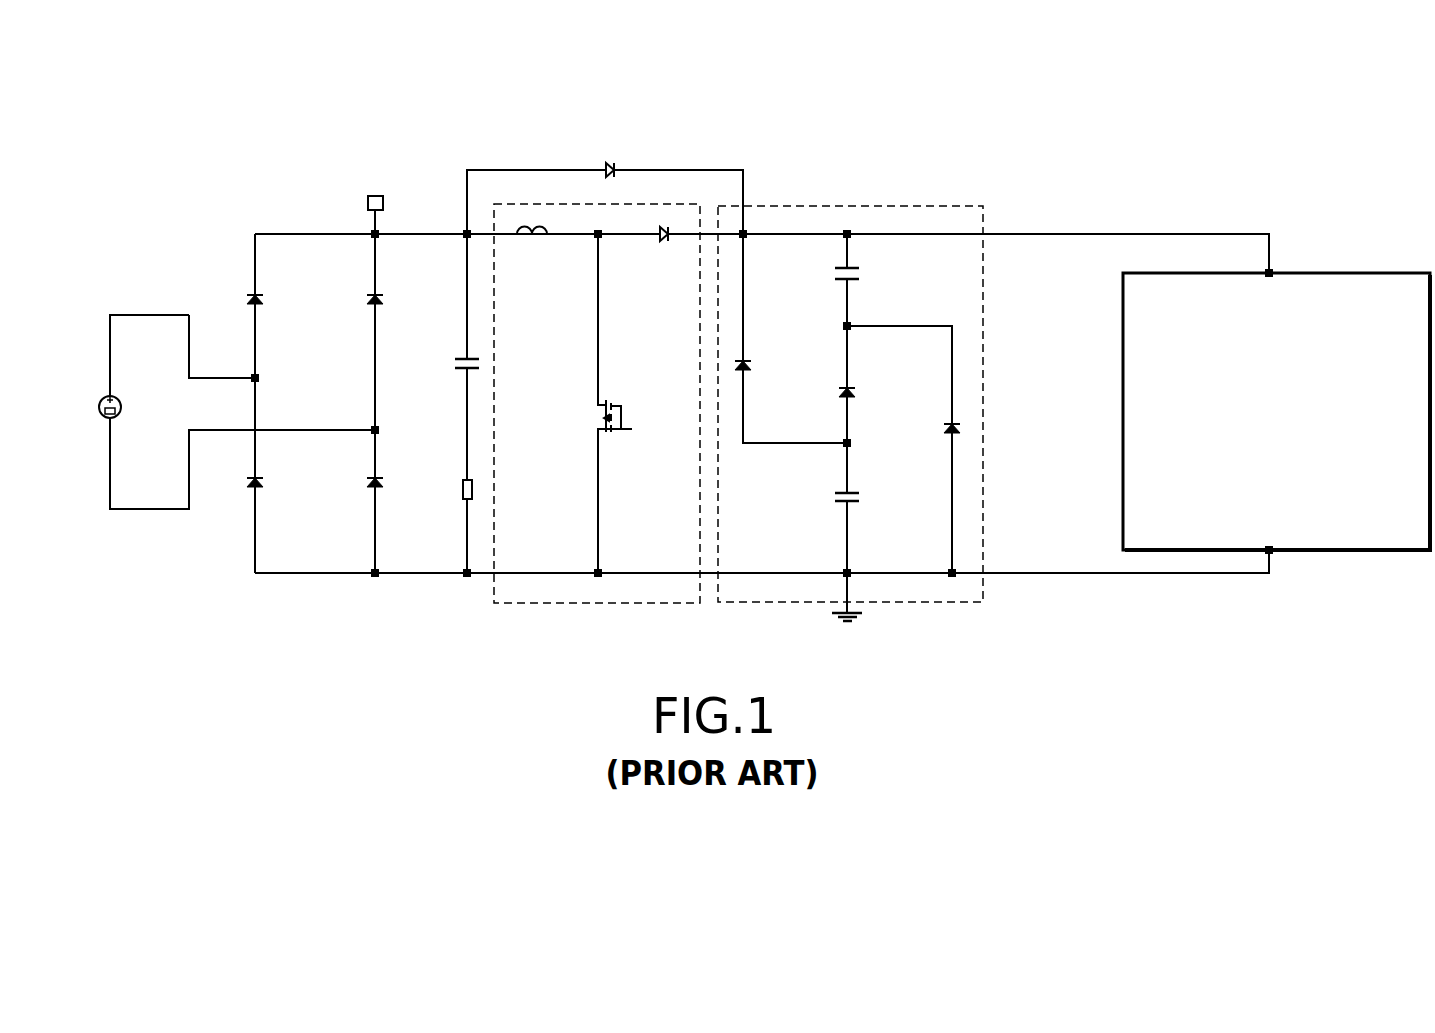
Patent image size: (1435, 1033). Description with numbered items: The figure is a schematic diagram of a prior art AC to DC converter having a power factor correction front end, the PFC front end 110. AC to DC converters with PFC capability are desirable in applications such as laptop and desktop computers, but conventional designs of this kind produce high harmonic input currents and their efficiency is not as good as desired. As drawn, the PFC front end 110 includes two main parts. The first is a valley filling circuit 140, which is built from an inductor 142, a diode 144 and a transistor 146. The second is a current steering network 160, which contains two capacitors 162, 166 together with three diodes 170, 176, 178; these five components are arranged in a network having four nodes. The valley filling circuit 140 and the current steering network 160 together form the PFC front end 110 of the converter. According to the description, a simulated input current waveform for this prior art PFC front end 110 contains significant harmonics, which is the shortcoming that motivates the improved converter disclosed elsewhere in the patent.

The PFC front end 110 is at (810, 167).
The valley filling circuit 140 is at (668, 203).
The inductor 142 is at (527, 272).
The diode 144 is at (655, 270).
The transistor 146 is at (602, 416).
The current steering network 160 is at (888, 204).
The capacitor 162 is at (853, 276).
The capacitor 166 is at (846, 495).
The diode 170 is at (741, 364).
The diode 176 is at (851, 394).
The diode 178 is at (951, 434).